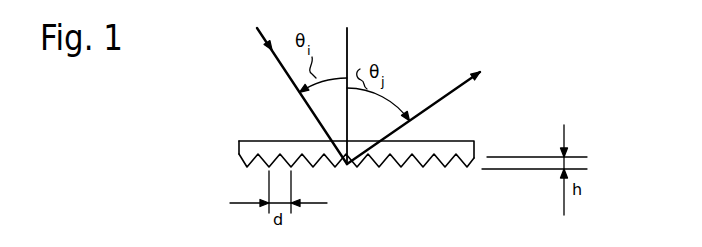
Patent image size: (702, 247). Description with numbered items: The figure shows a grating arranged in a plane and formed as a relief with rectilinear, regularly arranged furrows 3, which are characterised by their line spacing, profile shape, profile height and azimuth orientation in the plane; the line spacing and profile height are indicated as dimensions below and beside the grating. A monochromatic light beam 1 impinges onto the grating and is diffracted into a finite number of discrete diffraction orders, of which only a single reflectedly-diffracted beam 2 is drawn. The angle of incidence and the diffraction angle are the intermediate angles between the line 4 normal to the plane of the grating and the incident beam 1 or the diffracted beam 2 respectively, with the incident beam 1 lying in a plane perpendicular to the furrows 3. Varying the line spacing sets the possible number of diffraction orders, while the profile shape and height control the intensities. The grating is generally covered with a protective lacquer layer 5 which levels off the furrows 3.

The light beam 1 is at (284, 70).
The reflectedly-diffracted beam 2 is at (455, 92).
The grating furrows 3 is at (447, 168).
The normal line 4 is at (347, 32).
The protective lacquer layer 5 is at (238, 148).